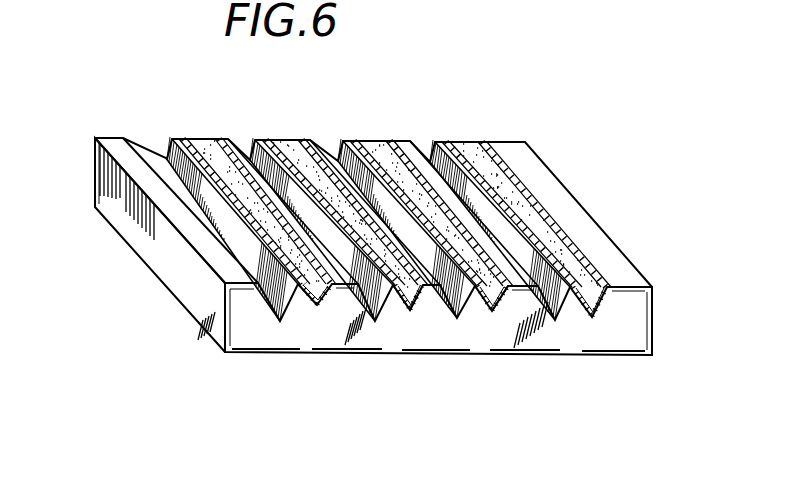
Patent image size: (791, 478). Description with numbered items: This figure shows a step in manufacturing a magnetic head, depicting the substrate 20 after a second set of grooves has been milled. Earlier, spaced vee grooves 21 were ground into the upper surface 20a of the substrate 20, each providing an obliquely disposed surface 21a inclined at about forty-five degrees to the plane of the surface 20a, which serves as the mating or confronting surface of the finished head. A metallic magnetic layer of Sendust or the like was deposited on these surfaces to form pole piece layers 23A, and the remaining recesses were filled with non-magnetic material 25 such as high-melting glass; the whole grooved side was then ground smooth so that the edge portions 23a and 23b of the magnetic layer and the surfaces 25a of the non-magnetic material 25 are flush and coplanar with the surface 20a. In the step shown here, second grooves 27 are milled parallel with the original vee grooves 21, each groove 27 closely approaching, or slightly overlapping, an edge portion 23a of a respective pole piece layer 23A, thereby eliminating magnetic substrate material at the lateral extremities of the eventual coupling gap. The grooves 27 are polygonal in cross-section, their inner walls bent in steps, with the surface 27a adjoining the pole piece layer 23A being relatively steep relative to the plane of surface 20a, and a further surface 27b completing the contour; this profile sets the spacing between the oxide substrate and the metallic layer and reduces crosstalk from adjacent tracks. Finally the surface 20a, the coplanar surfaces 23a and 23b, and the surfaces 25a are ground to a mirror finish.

The substrate 20 is at (204, 297).
The upper surface of substrate 20a is at (138, 165).
The vee grooves 21 is at (324, 314).
The obliquely disposed surfaces 21a is at (304, 297).
The edge portion of metallic magnetic layer 23a is at (203, 165).
The edge portion of metallic magnetic layer 23b is at (226, 152).
The pole piece layer 23A is at (393, 287).
The non-magnetic material 25 is at (504, 296).
The surface of non-magnetic material 25a is at (596, 267).
The second grooves 27 is at (278, 323).
The steep wall surface of second groove 27a is at (171, 148).
The wall surface of second groove 27b is at (447, 302).